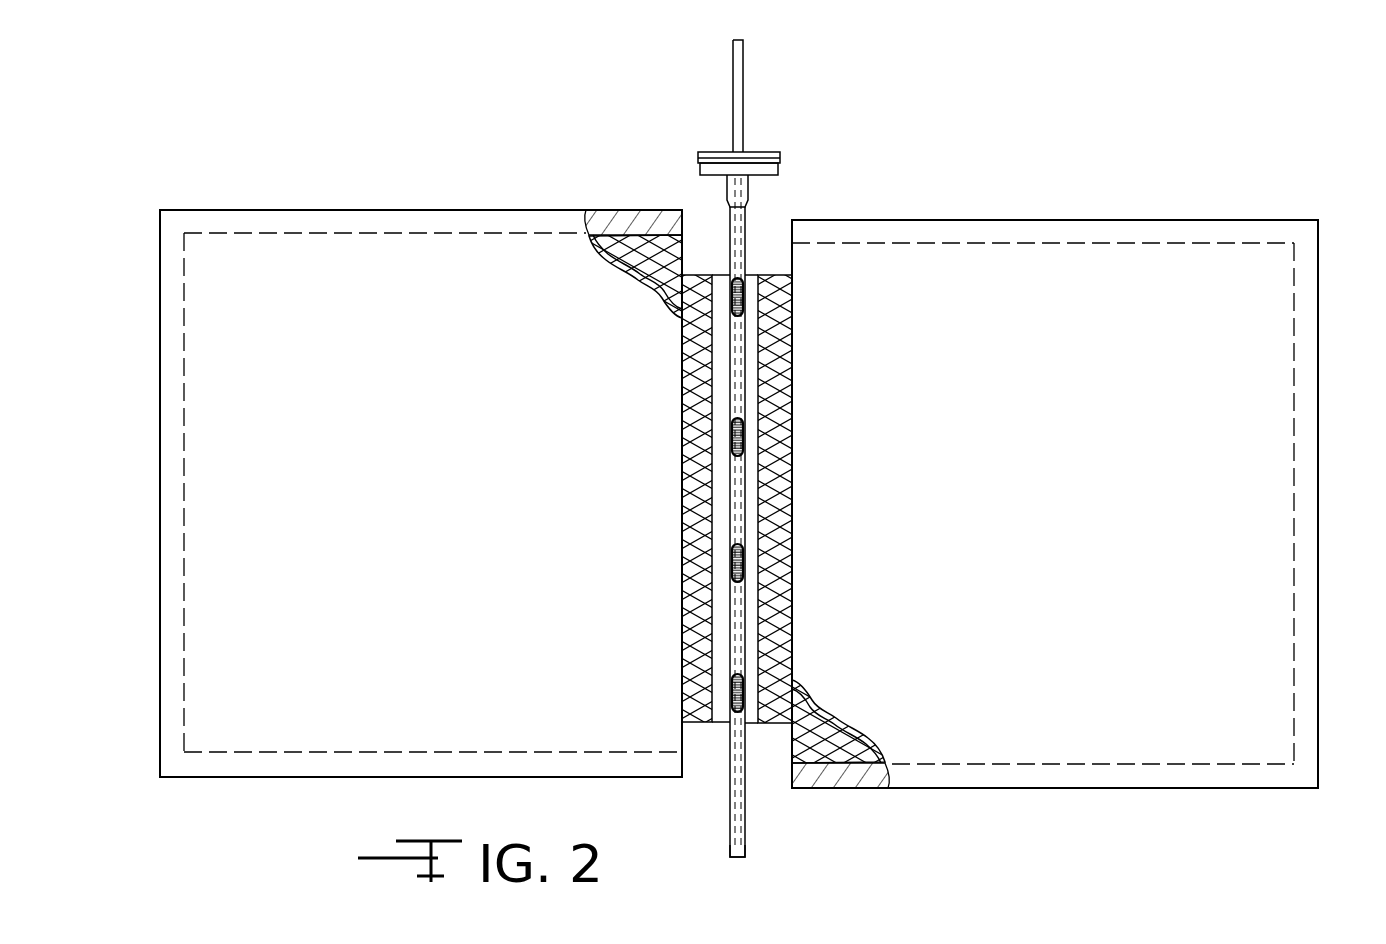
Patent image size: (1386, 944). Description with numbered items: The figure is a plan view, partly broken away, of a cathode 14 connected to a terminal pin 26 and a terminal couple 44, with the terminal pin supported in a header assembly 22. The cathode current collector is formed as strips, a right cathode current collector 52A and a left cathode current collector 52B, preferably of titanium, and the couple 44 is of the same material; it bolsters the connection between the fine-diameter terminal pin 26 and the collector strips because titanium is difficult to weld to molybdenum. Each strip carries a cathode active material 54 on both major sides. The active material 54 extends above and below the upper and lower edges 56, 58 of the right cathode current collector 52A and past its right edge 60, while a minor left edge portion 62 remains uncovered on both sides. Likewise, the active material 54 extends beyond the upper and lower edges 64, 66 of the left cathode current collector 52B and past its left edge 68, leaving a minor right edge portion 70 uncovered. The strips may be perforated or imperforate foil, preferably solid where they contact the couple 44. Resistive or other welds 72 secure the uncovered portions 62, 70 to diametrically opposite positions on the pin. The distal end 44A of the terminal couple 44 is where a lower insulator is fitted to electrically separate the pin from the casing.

The cathode 14 is at (1247, 204).
The header assembly 22 is at (762, 145).
The terminal pin 26 is at (744, 92).
The terminal couple 44 is at (784, 472).
The distal end of the terminal couple 44A is at (734, 856).
The right cathode current collector 52A is at (853, 757).
The left cathode current collector 52B is at (701, 723).
The cathode active material 54 is at (618, 222).
The upper edge of the right cathode current collector 56 is at (987, 245).
The lower edge of the right cathode current collector 58 is at (985, 765).
The right edge of the right cathode current collector 60 is at (1294, 587).
The minor left edge portion 62 is at (762, 275).
The upper edge of the left cathode current collector 64 is at (420, 233).
The lower edge of the left cathode current collector 66 is at (308, 753).
The left edge of the left cathode current collector 68 is at (182, 553).
The minor right edge portion 70 is at (708, 275).
The welds 72 is at (743, 308).